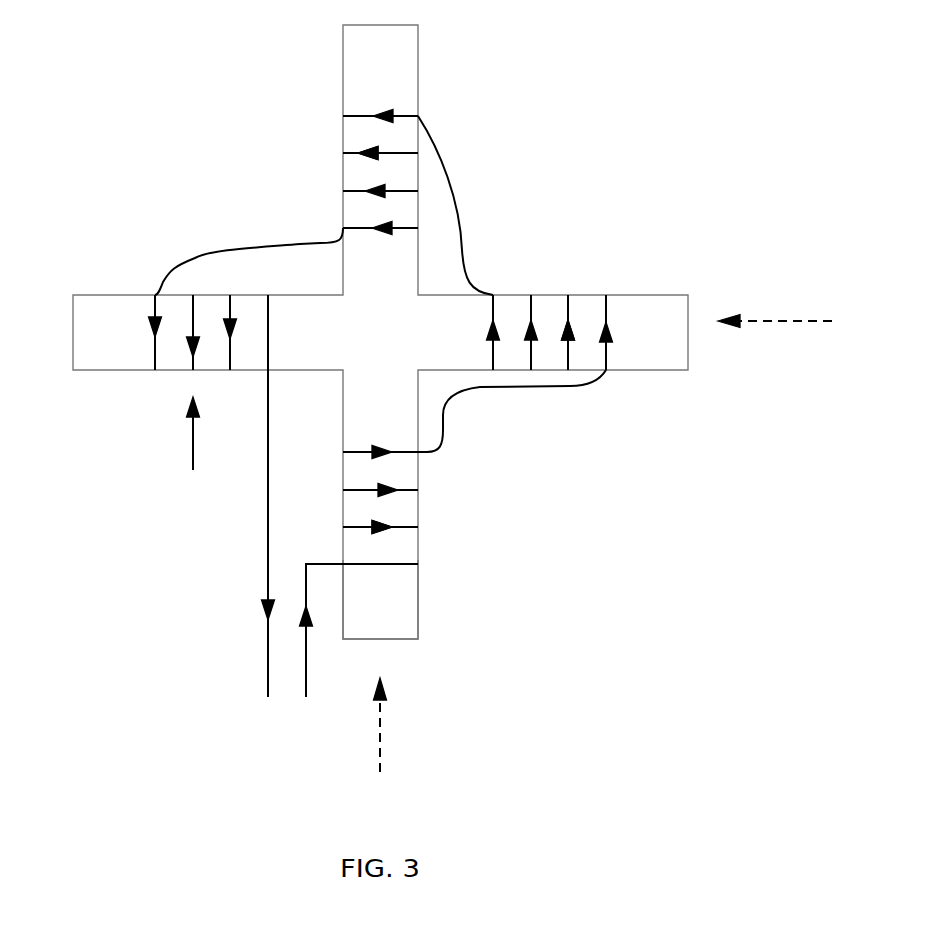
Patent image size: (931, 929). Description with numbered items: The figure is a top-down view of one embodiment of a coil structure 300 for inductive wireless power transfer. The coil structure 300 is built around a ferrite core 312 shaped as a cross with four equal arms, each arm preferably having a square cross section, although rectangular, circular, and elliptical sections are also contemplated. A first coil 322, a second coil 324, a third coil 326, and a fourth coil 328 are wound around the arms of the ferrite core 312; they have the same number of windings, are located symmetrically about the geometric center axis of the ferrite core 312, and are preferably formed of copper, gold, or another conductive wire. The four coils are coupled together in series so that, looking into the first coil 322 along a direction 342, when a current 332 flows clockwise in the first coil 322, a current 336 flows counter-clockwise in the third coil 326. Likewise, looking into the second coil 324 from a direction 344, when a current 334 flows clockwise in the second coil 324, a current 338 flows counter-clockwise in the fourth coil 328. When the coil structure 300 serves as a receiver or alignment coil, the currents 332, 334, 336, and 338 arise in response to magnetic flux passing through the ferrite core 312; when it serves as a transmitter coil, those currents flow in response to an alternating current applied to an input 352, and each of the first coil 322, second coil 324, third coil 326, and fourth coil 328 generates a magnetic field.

The coil structure 300 is at (155, 604).
The ferrite core 312 is at (398, 640).
The first coil 322 is at (438, 498).
The second coil 324 is at (549, 270).
The third coil 326 is at (305, 152).
The fourth coil 328 is at (193, 451).
The current 332 is at (380, 533).
The current 334 is at (570, 333).
The current 336 is at (368, 152).
The current 338 is at (150, 328).
The direction 342 is at (380, 755).
The direction 344 is at (763, 322).
The input 352 is at (277, 714).